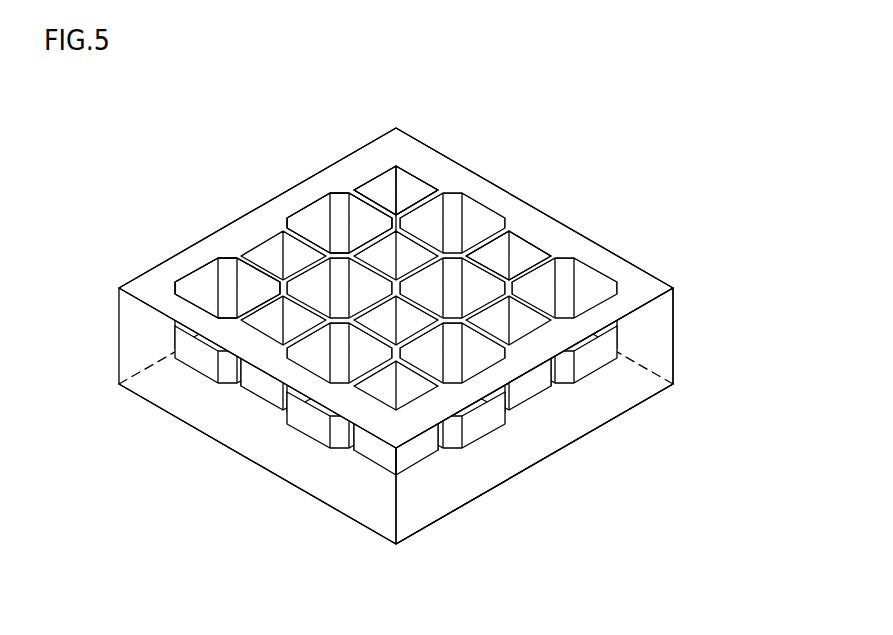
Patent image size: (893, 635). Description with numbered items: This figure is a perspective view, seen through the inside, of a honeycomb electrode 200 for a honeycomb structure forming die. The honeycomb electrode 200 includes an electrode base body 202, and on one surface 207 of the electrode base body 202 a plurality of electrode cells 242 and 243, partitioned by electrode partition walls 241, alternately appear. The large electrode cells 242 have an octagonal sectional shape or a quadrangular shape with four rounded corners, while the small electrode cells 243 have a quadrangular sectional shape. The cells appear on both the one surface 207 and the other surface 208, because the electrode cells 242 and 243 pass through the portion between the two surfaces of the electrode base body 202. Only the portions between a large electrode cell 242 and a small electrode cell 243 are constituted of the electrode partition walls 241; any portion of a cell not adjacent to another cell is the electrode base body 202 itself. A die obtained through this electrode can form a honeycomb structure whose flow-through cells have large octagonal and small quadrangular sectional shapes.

The honeycomb electrode 200 is at (541, 129).
The electrode base body 202 is at (662, 335).
The one surface 207 is at (645, 290).
The another surface 208 is at (582, 417).
The electrode partition walls 241 is at (368, 203).
The large electrode cells 242 is at (307, 215).
The small electrode cells 243 is at (492, 258).